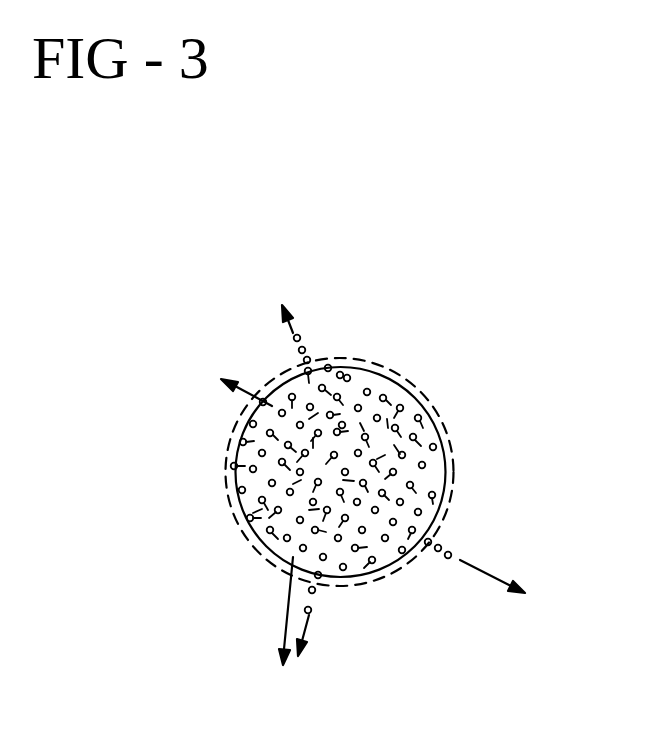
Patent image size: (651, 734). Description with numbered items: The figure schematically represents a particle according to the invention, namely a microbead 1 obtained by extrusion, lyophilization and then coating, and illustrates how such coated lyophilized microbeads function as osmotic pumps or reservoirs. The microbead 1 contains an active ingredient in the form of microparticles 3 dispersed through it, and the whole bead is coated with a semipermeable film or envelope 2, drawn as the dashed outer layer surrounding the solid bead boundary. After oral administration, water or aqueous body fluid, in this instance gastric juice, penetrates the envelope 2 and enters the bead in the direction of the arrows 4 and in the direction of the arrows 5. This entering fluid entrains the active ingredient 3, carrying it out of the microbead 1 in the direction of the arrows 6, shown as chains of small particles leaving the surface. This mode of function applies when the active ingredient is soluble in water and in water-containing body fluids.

The microbead 1 is at (264, 527).
The semipermeable film or envelope 2 is at (228, 500).
The active ingredient microparticles 3 is at (305, 350).
The arrows 4 is at (387, 446).
The arrows 5 is at (247, 395).
The arrows 6 is at (293, 333).